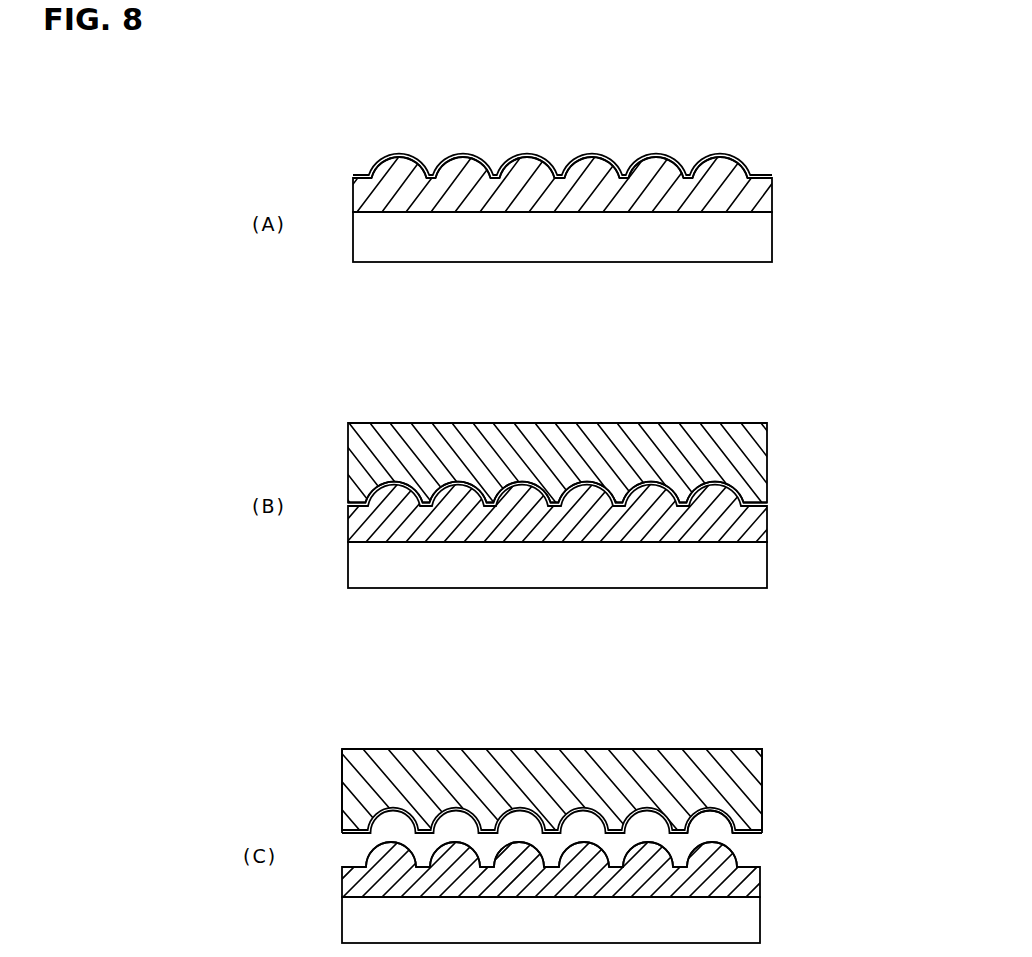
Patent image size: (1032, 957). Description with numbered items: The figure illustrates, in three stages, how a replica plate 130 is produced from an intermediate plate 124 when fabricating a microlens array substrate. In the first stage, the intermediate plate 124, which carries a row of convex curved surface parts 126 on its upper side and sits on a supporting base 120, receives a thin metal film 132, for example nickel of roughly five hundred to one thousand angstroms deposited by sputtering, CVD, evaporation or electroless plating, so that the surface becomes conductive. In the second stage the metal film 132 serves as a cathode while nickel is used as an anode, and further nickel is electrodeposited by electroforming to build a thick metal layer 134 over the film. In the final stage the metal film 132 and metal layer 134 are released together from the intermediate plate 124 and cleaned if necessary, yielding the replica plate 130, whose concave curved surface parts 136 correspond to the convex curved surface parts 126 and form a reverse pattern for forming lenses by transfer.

The substrate 120 is at (760, 245).
The intermediate plate 124 is at (765, 205).
The curved surface parts 126 is at (732, 165).
The replica plate 130 is at (857, 791).
The metal film 132 is at (763, 173).
The metal layer 134 is at (753, 438).
The concave curved surface parts 136 is at (735, 845).